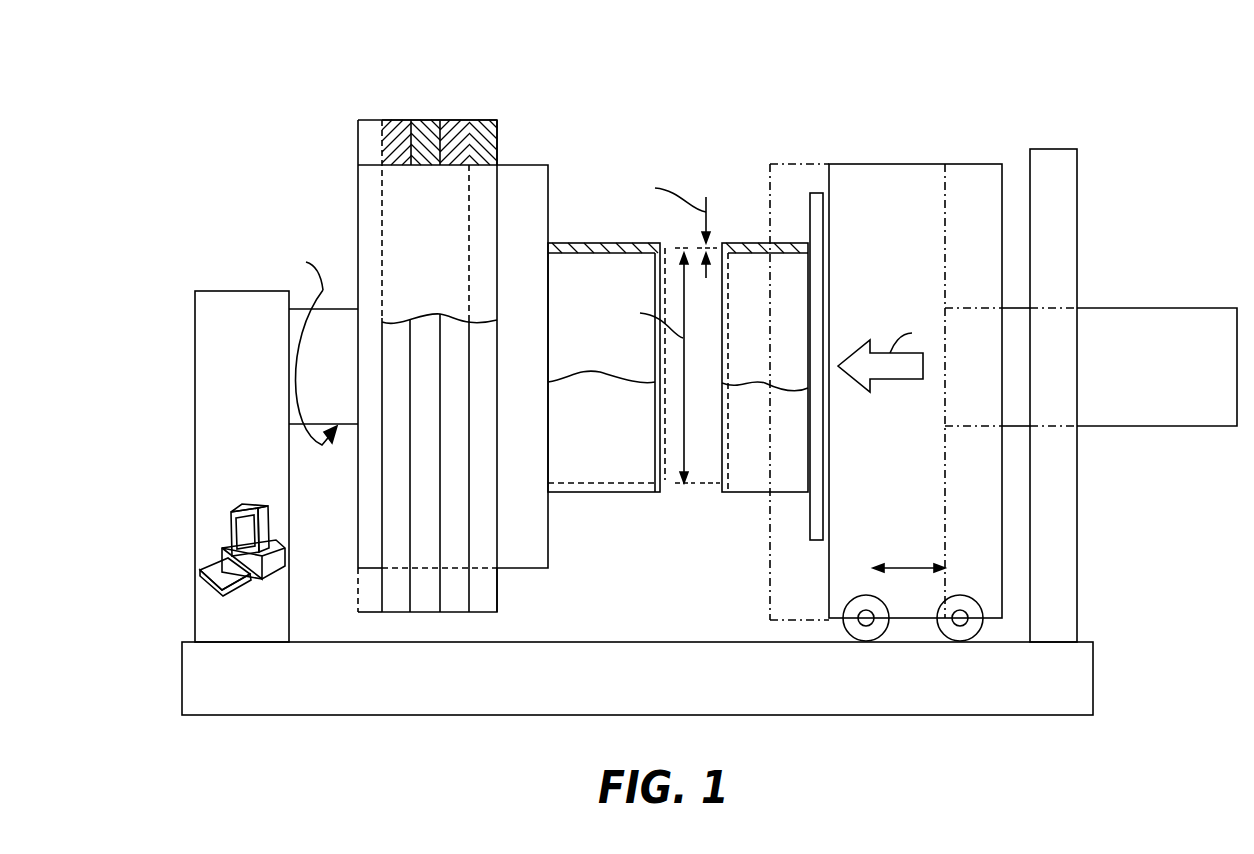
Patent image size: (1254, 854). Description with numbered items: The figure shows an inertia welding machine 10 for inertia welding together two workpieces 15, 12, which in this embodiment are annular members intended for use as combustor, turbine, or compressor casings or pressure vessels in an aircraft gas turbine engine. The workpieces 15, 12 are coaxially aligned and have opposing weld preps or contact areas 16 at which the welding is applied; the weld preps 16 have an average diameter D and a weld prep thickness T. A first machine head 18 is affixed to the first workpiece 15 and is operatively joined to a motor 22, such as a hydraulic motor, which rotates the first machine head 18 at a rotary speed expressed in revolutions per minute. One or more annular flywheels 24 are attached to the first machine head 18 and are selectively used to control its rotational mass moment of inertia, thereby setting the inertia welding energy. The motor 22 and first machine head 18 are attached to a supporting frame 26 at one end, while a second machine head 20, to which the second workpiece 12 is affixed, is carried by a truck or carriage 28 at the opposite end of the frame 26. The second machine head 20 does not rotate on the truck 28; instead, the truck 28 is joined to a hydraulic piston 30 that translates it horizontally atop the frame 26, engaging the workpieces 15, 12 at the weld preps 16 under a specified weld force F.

The inertia welding machine 10 is at (1086, 108).
The second workpiece 12 is at (765, 494).
The first workpiece 15 is at (612, 494).
The weld preps 16 is at (722, 478).
The first machine head 18 is at (513, 165).
The second machine head 20 is at (812, 193).
The motor 22 is at (238, 291).
The annular flywheels 24 is at (400, 120).
The supporting frame 26 is at (652, 694).
The truck or carriage 28 is at (872, 164).
The hydraulic piston 30 is at (1128, 308).